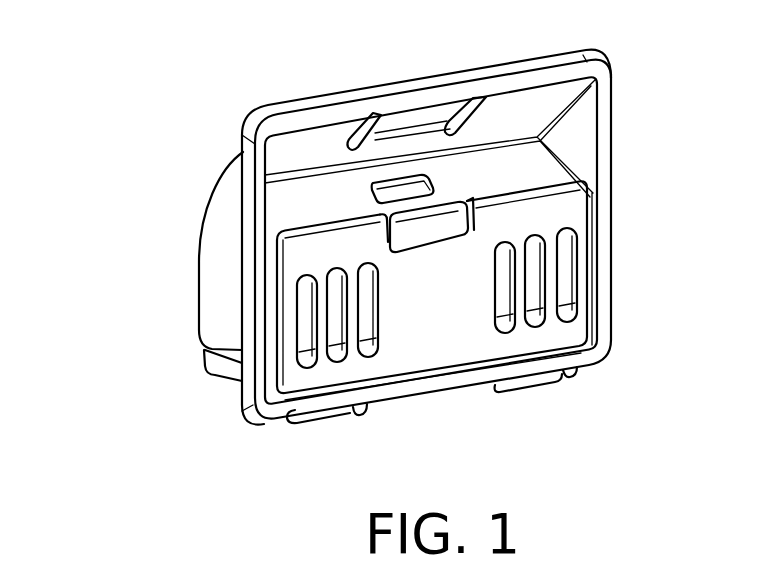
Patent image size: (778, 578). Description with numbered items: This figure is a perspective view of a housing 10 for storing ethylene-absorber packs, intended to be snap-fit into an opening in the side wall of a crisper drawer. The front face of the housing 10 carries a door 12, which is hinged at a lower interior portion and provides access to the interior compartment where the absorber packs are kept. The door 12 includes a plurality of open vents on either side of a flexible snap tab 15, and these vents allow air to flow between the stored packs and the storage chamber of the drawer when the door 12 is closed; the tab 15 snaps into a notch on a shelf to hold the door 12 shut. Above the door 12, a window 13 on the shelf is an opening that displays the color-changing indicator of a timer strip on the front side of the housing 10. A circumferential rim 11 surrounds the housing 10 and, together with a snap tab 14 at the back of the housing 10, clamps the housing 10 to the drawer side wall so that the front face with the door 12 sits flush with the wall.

The housing 10 is at (160, 96).
The circumferential rim 11 is at (545, 80).
The door 12 is at (425, 350).
The window 13 is at (372, 188).
The snap tab 14 is at (420, 113).
The snap tab 15 is at (430, 222).